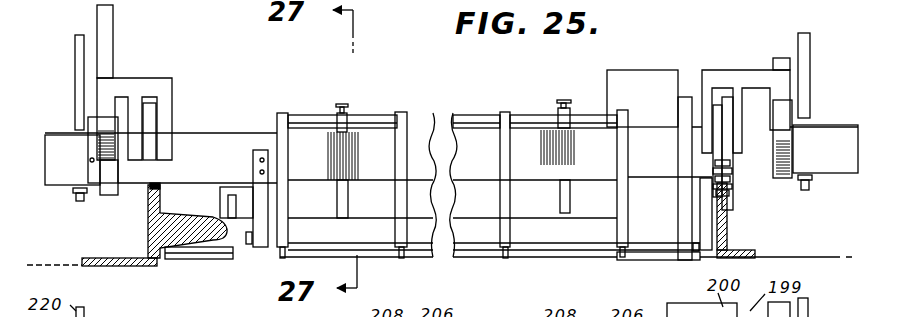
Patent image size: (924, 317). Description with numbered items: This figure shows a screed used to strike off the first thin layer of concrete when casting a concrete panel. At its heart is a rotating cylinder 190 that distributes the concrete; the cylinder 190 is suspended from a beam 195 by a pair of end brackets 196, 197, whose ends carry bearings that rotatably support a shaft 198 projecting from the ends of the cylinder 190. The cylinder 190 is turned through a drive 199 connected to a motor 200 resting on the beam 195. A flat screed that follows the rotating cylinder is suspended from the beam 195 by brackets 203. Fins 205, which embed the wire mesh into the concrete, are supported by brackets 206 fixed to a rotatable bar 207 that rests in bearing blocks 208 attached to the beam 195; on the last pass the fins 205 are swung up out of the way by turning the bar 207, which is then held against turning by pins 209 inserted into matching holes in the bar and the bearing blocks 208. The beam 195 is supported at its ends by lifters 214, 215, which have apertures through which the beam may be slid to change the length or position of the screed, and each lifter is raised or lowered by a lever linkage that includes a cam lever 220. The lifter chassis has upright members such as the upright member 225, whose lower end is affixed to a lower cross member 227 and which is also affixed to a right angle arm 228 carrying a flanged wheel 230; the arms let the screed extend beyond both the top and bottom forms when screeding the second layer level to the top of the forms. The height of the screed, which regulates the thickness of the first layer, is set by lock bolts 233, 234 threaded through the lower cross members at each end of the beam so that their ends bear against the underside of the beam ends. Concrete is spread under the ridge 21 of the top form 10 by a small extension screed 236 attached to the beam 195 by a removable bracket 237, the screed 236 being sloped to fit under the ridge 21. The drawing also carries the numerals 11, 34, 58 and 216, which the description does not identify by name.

The top form 10 is at (138, 242).
The right end frame member 11 is at (730, 232).
The ridge 21 is at (222, 237).
The horizontal shaft 34 is at (157, 186).
The stacked spacer assembly 58 is at (730, 179).
The rotating cylinder 190 is at (490, 218).
The beam 195 is at (450, 185).
The end bracket 196 is at (220, 197).
The end bracket 197 is at (712, 208).
The shaft 198 is at (695, 251).
The drive 199 is at (684, 98).
The motor 200 is at (672, 70).
The bracket 203 is at (560, 203).
The fin 205 is at (282, 258).
The bracket 206 is at (282, 125).
The rotatable bar 207 is at (307, 120).
The bearing block 208 is at (347, 123).
The pin 209 is at (343, 105).
The lifter 214 is at (90, 147).
The lifter 215 is at (792, 133).
The left housing 216 is at (90, 162).
The cam lever 220 is at (75, 58).
The upright member 225 is at (113, 38).
The lower cross member 227 is at (110, 196).
The right angle arm 228 is at (152, 80).
The flanged wheel 230 is at (157, 117).
The lock bolt 233 is at (62, 212).
The lock bolt 234 is at (807, 192).
The extension screed 236 is at (200, 250).
The bracket 237 is at (260, 182).